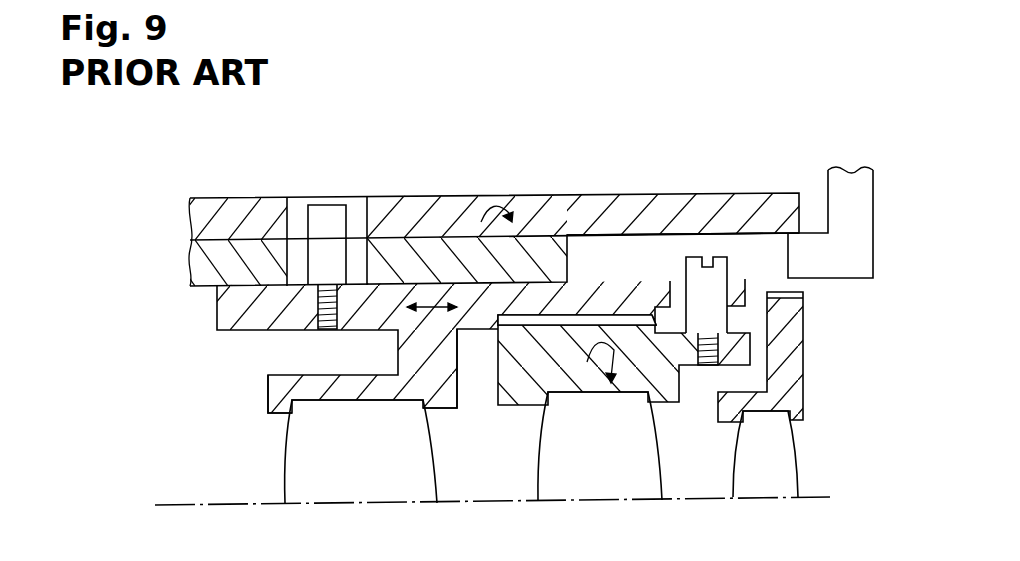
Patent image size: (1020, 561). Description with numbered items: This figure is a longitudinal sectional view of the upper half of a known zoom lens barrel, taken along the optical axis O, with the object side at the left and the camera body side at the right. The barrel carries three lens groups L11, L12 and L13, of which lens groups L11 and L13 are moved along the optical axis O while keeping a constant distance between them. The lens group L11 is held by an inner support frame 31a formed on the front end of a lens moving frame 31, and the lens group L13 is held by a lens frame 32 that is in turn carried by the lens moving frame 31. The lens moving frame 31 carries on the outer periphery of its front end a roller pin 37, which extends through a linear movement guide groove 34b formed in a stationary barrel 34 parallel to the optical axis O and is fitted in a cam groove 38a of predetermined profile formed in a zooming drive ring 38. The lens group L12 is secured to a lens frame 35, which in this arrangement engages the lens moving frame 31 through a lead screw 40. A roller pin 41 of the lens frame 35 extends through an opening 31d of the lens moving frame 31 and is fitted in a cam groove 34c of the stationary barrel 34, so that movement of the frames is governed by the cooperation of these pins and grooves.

The lens moving frame 31 is at (243, 322).
The inner support frame 31a is at (288, 393).
The opening 31d is at (745, 294).
The lens frame 32 is at (801, 395).
The stationary barrel 34 is at (453, 240).
The linear movement guide groove 34b is at (362, 258).
The cam groove 34c is at (658, 257).
The lens frame 35 is at (516, 397).
The roller pin 37 is at (327, 213).
The zooming drive ring 38 is at (253, 201).
The cam groove 38a is at (296, 209).
The lead screw 40 is at (555, 320).
The roller pin 41 is at (721, 257).
The optical axis O is at (236, 504).
The lens group L11 is at (361, 451).
The lens group L12 is at (600, 446).
The lens group L13 is at (765, 454).